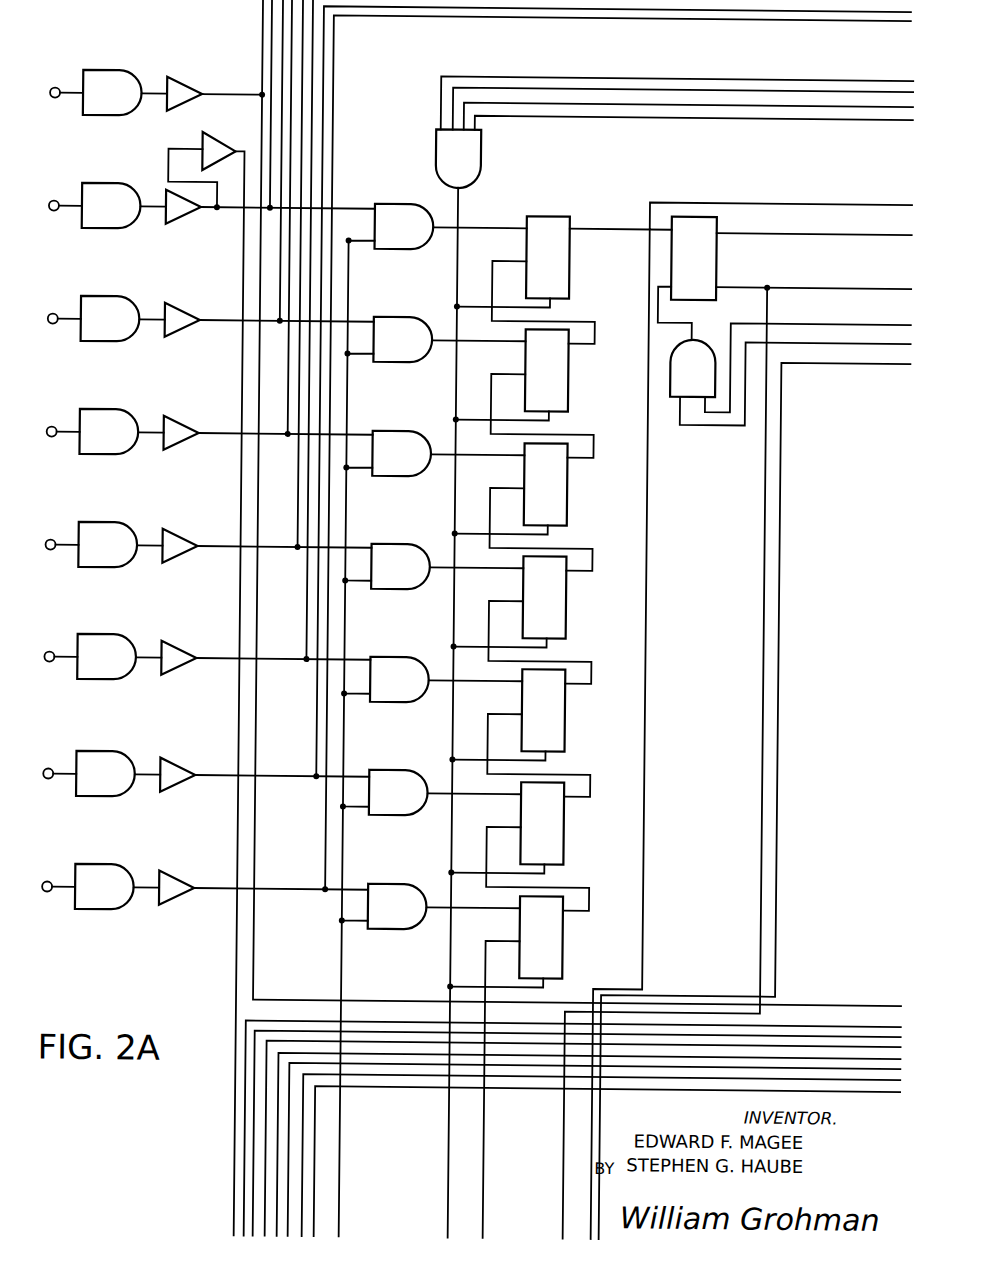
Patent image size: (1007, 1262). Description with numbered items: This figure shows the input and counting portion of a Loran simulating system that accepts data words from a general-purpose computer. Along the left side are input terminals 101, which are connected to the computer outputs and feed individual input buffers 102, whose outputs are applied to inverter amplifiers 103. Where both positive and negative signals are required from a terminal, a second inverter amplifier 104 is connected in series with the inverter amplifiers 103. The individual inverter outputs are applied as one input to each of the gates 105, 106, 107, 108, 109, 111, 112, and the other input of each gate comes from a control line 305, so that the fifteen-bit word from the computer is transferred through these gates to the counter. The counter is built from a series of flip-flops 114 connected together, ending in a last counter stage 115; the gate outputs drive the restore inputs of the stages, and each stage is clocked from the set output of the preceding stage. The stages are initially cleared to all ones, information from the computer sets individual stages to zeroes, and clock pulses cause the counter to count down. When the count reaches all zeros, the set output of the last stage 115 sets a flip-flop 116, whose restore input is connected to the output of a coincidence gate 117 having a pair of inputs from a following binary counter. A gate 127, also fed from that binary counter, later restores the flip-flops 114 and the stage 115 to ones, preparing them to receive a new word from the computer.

The input terminals 101 is at (56, 880).
The input buffers 102 is at (100, 910).
The inverter amplifiers 103 is at (186, 906).
The second inverter amplifier 104 is at (226, 152).
The gate 105 is at (402, 209).
The gate 106 is at (402, 322).
The gate 107 is at (402, 436).
The gate 108 is at (402, 549).
The gate 109 is at (402, 662).
The gate 111 is at (402, 775).
The gate 112 is at (402, 889).
The flip-flops 114 is at (588, 943).
The last counter stage 115 is at (541, 220).
The flip-flop 116 is at (768, 620).
The coincidence gate 117 is at (682, 399).
The gate 127 is at (459, 497).
The control line 305 is at (572, 1132).